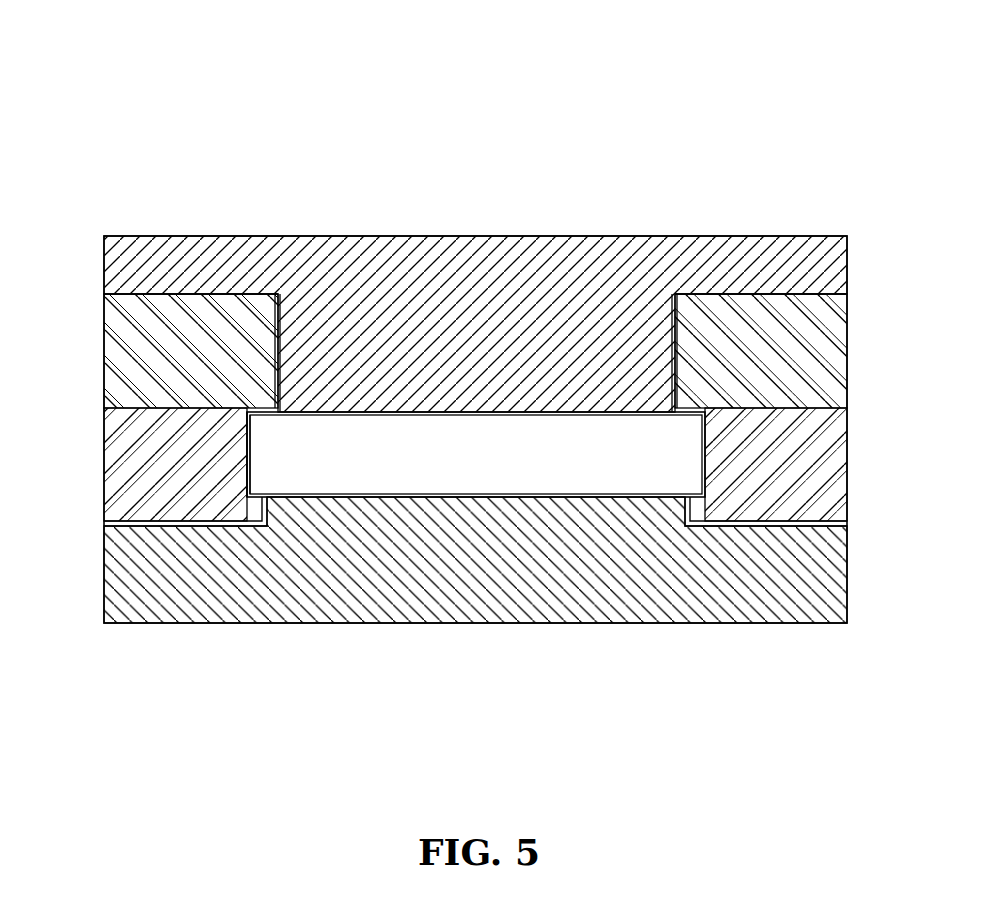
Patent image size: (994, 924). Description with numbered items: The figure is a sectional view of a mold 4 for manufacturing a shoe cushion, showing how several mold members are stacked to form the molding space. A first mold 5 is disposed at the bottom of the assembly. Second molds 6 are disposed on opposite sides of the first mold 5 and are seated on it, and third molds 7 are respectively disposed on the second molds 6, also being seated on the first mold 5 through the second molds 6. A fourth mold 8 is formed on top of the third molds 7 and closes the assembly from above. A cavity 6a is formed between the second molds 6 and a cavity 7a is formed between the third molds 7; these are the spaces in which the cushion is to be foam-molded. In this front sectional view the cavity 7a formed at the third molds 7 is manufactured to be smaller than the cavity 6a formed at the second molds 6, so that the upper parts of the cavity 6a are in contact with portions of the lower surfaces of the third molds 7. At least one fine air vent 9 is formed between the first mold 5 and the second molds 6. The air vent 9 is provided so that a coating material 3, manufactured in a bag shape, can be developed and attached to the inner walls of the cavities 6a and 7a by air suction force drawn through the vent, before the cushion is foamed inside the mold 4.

The mold 4 is at (308, 90).
The fourth mold 8 is at (207, 262).
The third molds 7 is at (118, 342).
The cavity 7a is at (656, 358).
The second molds 6 is at (118, 455).
The cavity 6a is at (253, 460).
The coating material 3 is at (703, 455).
The fine air vent 9 is at (850, 525).
The first mold 5 is at (501, 605).